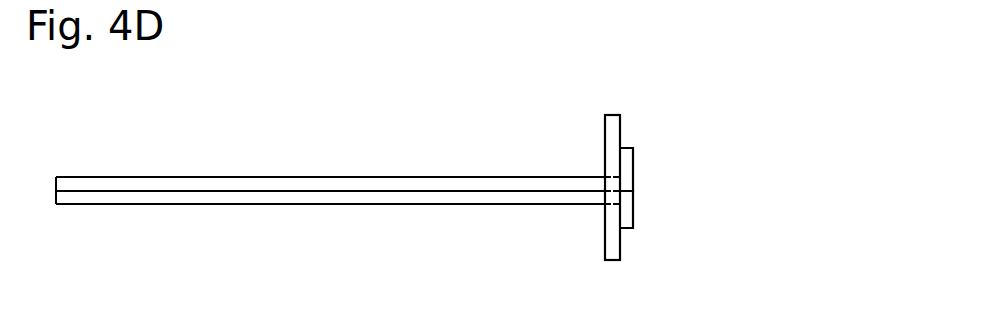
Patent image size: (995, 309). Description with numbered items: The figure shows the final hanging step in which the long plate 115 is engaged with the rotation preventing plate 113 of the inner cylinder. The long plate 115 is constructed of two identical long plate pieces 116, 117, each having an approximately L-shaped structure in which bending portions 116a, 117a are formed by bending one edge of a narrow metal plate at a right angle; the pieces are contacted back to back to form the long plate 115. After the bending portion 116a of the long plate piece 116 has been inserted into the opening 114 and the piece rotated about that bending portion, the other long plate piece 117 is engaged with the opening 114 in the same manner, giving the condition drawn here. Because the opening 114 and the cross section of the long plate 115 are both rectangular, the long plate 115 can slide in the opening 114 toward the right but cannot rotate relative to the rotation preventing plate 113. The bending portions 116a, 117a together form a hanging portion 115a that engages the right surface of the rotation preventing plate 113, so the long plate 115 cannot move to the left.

The rotation preventing plate 113 is at (610, 252).
The opening 114 is at (614, 178).
The long plate 115 is at (330, 129).
The long plate piece 116 is at (403, 200).
The long plate piece 117 is at (310, 182).
The hanging portion 115a is at (742, 190).
The bending portion 116a is at (634, 213).
The bending portion 117a is at (634, 165).